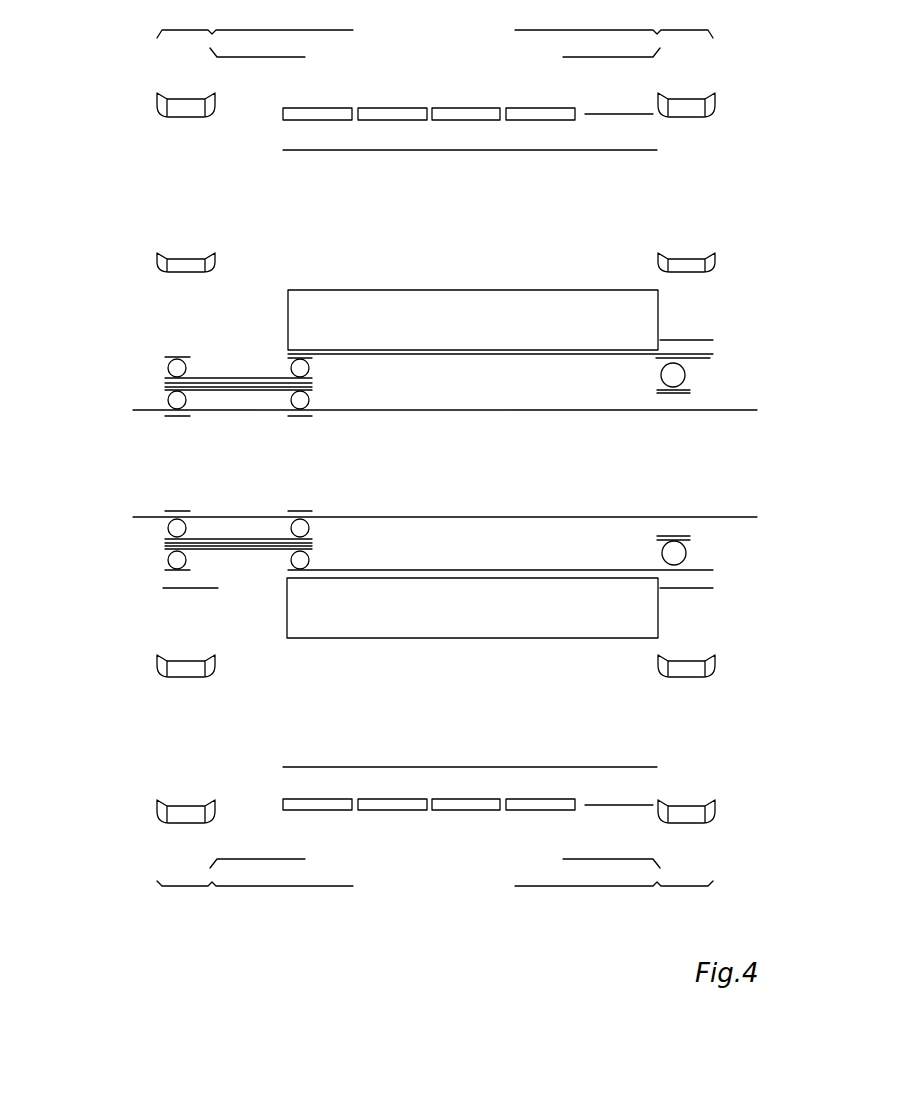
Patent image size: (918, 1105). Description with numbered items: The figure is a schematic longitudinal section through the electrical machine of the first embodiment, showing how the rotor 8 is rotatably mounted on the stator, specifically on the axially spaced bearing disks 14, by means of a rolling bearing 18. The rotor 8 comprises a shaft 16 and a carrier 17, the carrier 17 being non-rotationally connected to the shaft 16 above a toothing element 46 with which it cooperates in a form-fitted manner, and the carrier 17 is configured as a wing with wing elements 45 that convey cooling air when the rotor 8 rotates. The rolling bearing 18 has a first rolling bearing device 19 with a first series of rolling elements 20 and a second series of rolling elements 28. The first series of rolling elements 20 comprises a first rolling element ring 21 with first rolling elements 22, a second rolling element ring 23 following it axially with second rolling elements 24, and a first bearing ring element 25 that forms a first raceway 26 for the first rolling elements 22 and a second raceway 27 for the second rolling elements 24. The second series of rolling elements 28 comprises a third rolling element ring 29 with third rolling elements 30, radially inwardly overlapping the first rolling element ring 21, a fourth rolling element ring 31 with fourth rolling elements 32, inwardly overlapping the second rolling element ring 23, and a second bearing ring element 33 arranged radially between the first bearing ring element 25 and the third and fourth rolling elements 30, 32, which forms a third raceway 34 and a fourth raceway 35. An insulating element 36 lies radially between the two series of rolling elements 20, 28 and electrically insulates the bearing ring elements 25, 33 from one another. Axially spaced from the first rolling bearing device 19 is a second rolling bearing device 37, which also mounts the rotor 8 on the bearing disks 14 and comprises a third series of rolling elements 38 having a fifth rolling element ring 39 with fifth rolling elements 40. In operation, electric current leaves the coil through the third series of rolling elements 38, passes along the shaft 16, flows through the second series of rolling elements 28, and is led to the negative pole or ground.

The rotor 8 is at (752, 400).
The bearing disks 14 is at (184, 257).
The shaft 16 is at (531, 412).
The carrier 17 is at (473, 300).
The rolling bearing 18 is at (718, 352).
The first rolling bearing device 19 is at (150, 573).
The first series of rolling elements 20 is at (153, 367).
The first rolling element ring 21 is at (177, 355).
The first rolling elements 22 is at (175, 358).
The second rolling element ring 23 is at (301, 340).
The second rolling elements 24 is at (302, 368).
The first bearing ring element 25 is at (238, 383).
The first raceway 26 is at (206, 362).
The second raceway 27 is at (262, 385).
The second series of rolling elements 28 is at (158, 396).
The third rolling element ring 29 is at (150, 420).
The third rolling elements 30 is at (175, 412).
The fourth rolling element ring 31 is at (304, 424).
The fourth rolling elements 32 is at (304, 402).
The second bearing ring element 33 is at (279, 405).
The third raceway 34 is at (200, 412).
The fourth raceway 35 is at (265, 537).
The insulating element 36 is at (247, 405).
The second rolling bearing device 37 is at (658, 416).
The third series of rolling elements 38 is at (654, 374).
The fifth rolling element ring 39 is at (678, 396).
The fifth rolling elements 40 is at (676, 370).
The wing elements 45 is at (160, 598).
The toothing element 46 is at (280, 578).